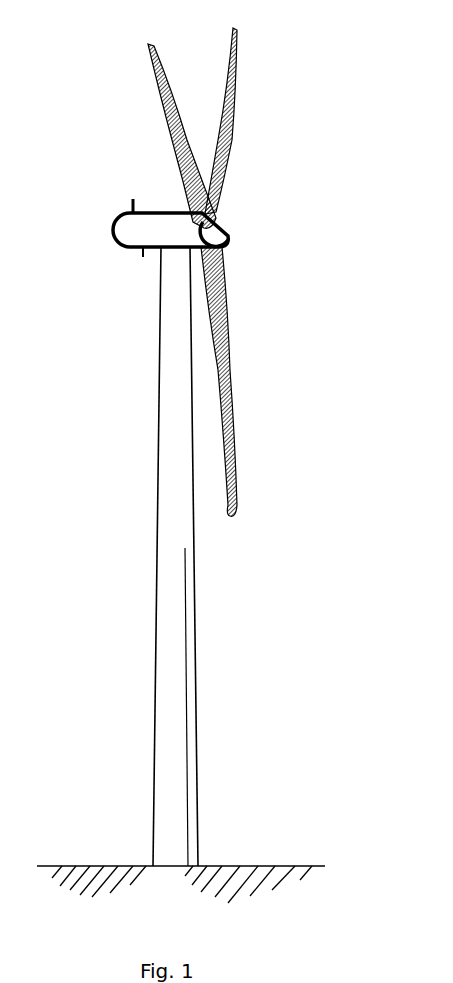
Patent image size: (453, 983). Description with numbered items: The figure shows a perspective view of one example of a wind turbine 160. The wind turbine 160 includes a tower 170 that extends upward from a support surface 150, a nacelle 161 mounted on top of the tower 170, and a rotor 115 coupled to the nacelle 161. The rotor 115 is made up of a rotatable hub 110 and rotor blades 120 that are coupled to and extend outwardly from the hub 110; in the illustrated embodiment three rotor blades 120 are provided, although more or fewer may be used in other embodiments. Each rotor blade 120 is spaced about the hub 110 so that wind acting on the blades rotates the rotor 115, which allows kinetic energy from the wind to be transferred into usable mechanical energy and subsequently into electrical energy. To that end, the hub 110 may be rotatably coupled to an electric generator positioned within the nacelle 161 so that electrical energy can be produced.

The wind turbine 160 is at (322, 92).
The tower 170 is at (163, 643).
The nacelle 161 is at (142, 255).
The rotor 115 is at (236, 210).
The hub 110 is at (231, 233).
The rotor blade 120 is at (226, 62).
The support surface 150 is at (102, 865).